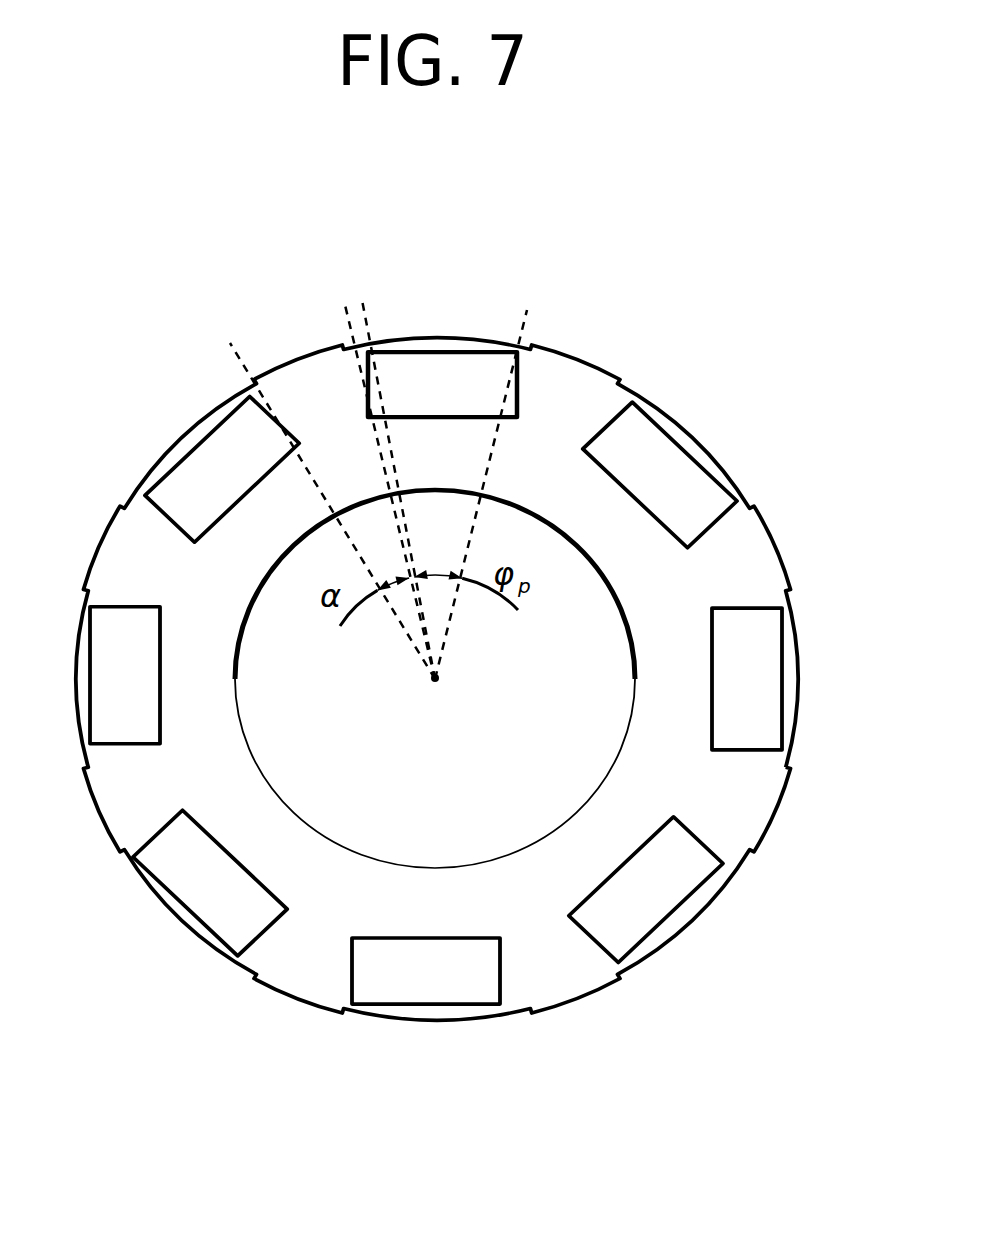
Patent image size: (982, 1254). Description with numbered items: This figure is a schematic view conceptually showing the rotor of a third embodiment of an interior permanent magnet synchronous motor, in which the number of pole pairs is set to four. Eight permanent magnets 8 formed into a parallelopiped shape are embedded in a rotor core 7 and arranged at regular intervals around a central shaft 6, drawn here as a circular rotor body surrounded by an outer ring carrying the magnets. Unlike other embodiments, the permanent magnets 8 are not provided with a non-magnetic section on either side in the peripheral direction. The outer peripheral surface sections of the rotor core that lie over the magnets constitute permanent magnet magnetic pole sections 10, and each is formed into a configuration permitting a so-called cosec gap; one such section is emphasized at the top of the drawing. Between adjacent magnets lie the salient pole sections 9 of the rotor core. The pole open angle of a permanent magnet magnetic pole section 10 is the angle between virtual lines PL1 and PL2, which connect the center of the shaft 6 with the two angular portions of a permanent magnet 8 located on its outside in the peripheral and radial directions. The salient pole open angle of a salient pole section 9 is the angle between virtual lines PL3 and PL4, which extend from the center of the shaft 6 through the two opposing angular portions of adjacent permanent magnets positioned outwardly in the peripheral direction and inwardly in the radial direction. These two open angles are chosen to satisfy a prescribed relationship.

The shaft 6 is at (482, 822).
The rotor core 7 is at (648, 782).
The permanent magnet 8 is at (492, 390).
The salient pole section 9 is at (308, 373).
The permanent magnet magnetic pole section 10 is at (437, 347).
The virtual line PL1 is at (362, 300).
The virtual line PL2 is at (510, 475).
The virtual line PL3 is at (345, 305).
The virtual line PL4 is at (310, 494).